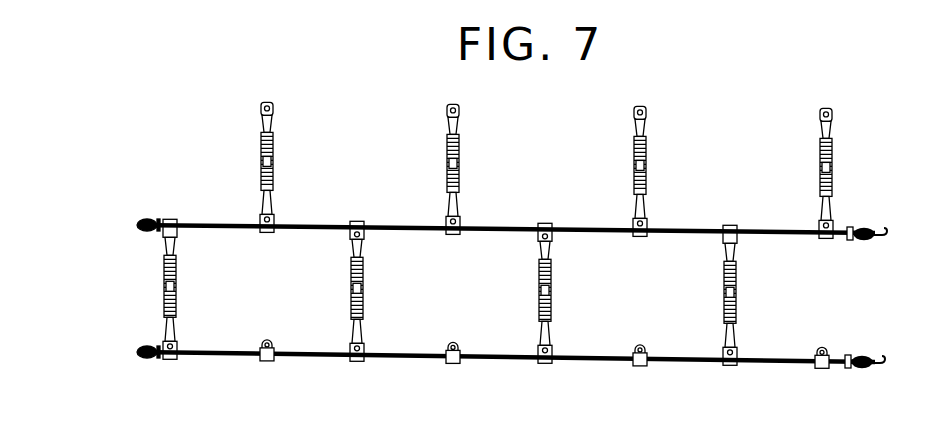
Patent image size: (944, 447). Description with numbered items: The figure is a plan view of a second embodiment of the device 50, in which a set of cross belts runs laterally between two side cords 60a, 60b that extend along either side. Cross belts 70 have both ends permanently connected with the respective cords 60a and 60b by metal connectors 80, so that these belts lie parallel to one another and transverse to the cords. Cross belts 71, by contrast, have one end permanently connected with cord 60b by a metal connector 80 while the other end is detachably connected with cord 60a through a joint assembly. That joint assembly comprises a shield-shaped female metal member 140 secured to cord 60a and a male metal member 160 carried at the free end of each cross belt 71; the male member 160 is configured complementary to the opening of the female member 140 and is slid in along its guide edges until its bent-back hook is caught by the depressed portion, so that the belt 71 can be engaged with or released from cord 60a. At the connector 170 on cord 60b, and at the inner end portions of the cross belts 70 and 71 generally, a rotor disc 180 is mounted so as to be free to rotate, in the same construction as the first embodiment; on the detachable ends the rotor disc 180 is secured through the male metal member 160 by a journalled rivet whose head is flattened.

The stretcher frame assembly 50 is at (512, 296).
The side cord 60a is at (678, 364).
The side cord 60b is at (676, 229).
The cross belt 70 is at (177, 292).
The cross belt 71 is at (273, 158).
The metal connector 80 is at (545, 224).
The female metal member 140 is at (266, 365).
The male metal member 160 is at (455, 104).
The clamp body 170 is at (357, 222).
The rotor disc 180 is at (367, 229).